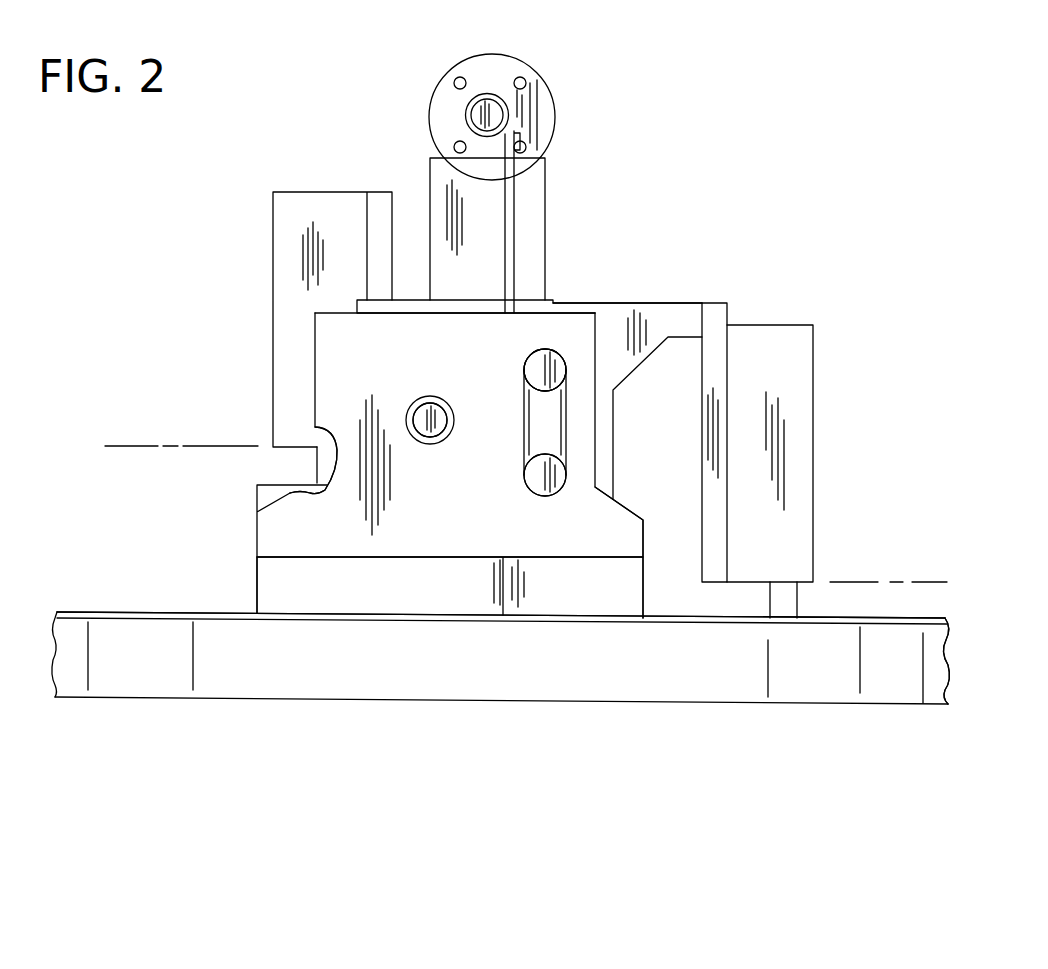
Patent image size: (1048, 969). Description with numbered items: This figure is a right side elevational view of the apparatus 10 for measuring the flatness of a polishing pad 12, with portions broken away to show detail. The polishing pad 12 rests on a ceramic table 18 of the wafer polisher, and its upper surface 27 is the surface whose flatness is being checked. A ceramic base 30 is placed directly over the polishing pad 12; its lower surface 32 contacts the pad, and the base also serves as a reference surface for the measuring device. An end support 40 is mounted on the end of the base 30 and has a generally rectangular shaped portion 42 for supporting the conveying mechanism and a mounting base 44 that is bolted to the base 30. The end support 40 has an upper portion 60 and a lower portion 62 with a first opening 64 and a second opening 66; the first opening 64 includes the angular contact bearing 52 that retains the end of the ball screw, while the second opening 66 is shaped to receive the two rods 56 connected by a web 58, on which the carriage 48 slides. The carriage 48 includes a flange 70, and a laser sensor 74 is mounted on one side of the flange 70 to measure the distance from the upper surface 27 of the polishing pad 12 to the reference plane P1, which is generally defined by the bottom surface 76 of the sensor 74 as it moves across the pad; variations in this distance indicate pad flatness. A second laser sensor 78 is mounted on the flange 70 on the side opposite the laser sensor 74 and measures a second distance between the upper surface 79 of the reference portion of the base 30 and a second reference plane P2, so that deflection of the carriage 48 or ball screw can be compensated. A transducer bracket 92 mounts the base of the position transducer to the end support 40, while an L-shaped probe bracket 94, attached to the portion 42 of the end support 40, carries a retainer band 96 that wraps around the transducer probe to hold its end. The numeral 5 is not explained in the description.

The apparatus 10 is at (722, 188).
The polishing pad 12 is at (943, 612).
The ceramic table 18 is at (850, 688).
The upper surface of the polishing pad 27 is at (718, 612).
The ceramic base 30 is at (275, 577).
The lower surface of the base 32 is at (945, 667).
The end support 40 is at (553, 303).
The rectangular shaped portion 42 is at (318, 397).
The mounting base 44 is at (598, 528).
The carriage 48 is at (662, 302).
The slot end 5 is at (535, 353).
The angular contact bearing 52 is at (423, 440).
The rods 56 is at (533, 487).
The web 58 is at (527, 433).
The upper portion of the end support 60 is at (318, 340).
The lower portion of the end support 62 is at (270, 527).
The first opening 64 is at (438, 403).
The second opening 66 is at (527, 383).
The flange 70 is at (700, 303).
The laser sensor 74 is at (797, 450).
The bottom surface of the sensor 76 is at (793, 585).
The second laser sensor 78 is at (347, 203).
The upper surface of the reference portion 79 is at (273, 480).
The transducer bracket 92 is at (548, 180).
The probe bracket 94 is at (520, 222).
The retainer band 96 is at (515, 126).
The reference plane P1 is at (860, 582).
The second reference plane P2 is at (205, 445).